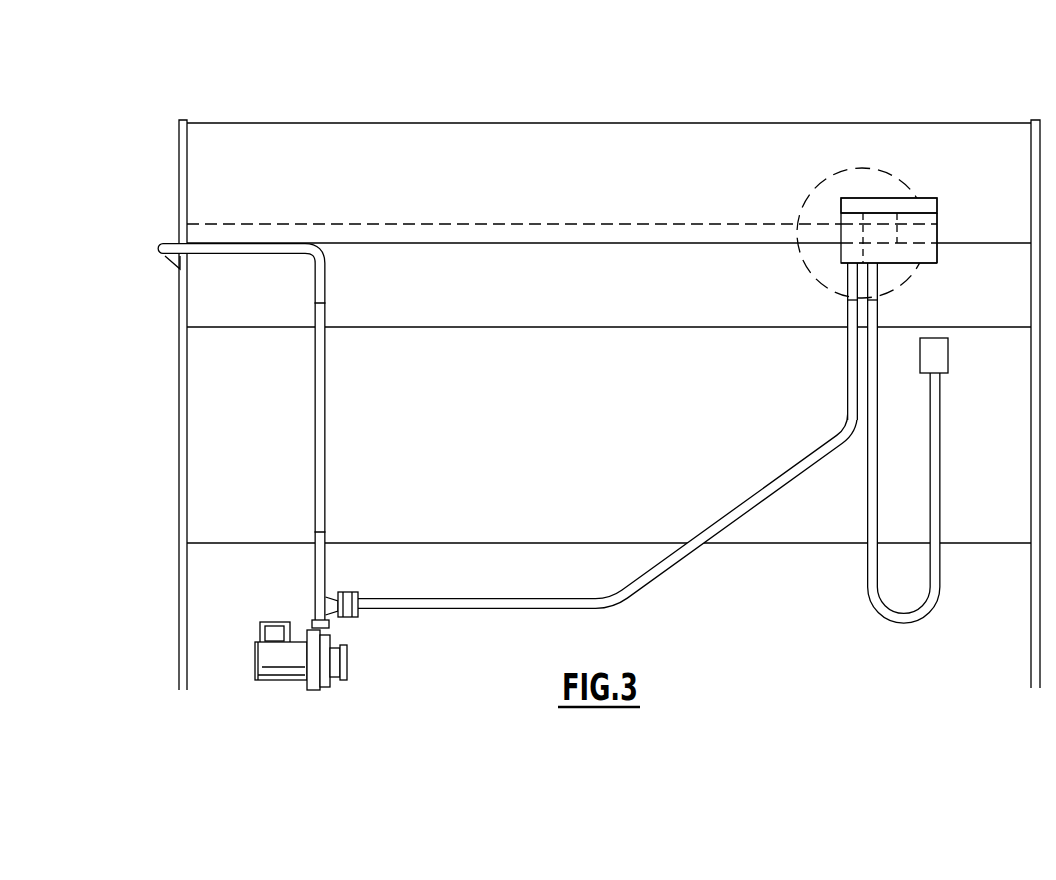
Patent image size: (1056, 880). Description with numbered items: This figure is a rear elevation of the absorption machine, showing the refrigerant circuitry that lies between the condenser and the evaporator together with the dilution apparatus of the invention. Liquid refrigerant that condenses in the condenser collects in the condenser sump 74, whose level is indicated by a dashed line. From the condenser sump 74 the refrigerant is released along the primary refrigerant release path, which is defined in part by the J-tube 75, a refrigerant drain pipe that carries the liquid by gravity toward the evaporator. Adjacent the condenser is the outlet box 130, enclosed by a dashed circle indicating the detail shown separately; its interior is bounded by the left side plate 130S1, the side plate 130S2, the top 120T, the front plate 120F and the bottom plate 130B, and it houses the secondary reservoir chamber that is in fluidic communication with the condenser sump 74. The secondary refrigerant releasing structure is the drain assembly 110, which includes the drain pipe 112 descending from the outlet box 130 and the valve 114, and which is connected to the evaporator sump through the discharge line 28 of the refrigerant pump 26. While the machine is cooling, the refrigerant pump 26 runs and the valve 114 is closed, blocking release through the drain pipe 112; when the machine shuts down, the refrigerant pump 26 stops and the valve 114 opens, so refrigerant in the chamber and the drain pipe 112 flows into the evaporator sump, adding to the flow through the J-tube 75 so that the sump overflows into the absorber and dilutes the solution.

The refrigerant pump 26 is at (307, 689).
The refrigerant discharge line 28 is at (312, 622).
The condenser sump 74 is at (486, 233).
The J-tube 75 is at (941, 413).
The drain assembly 110 is at (568, 593).
The drain pipe 112 is at (848, 393).
The valve 114 is at (352, 618).
The top wall of housing 120T is at (931, 207).
The front plate 120F is at (937, 255).
The outlet box 130 is at (832, 202).
The left side plate 130S1 is at (840, 256).
The second sensor 130S2 is at (938, 225).
The bottom plate 130B is at (932, 268).